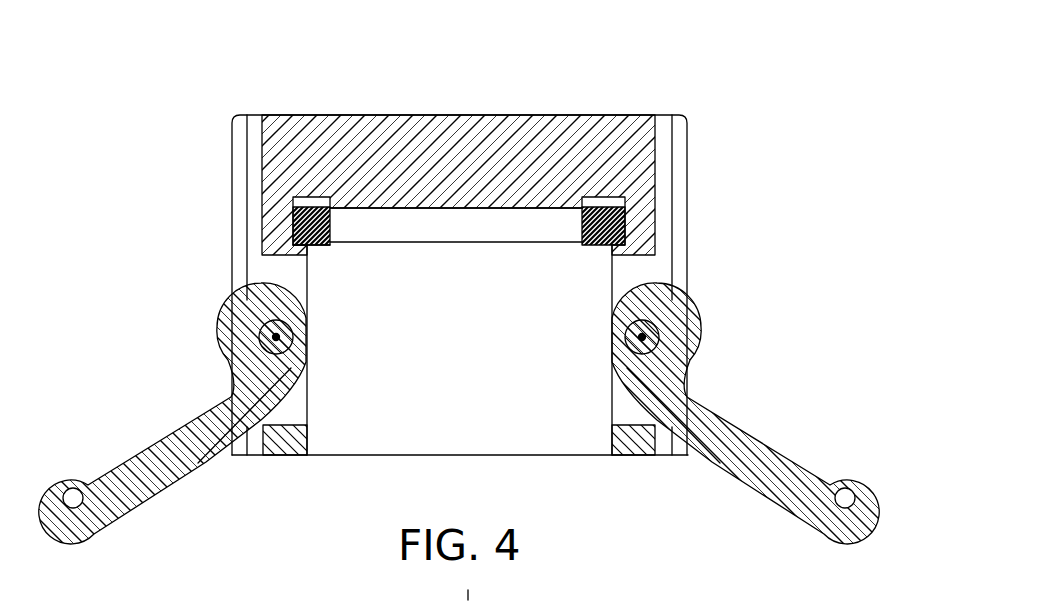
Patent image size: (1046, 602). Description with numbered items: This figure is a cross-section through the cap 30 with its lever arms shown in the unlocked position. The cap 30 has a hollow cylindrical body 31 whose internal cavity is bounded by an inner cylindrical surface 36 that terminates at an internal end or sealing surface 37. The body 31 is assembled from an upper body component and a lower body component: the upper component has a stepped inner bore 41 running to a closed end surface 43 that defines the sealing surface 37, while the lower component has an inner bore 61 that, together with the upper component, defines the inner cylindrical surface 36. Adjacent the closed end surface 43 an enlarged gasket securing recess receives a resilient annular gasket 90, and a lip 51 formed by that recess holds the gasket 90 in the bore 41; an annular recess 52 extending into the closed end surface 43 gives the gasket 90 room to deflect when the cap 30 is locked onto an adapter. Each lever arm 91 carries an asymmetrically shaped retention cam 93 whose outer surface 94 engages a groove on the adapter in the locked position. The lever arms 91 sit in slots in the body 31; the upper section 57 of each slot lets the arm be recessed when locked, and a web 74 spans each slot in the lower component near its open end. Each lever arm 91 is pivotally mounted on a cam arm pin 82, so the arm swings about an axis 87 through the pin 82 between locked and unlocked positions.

The cap 30 is at (148, 105).
The hollow cylindrical body 31 is at (322, 115).
The upper section of lever arm receiving slot 57 is at (667, 162).
The internal end surface 37 is at (478, 215).
The closed end surface 43 is at (497, 207).
The annular recess 52 is at (308, 198).
The annular gasket 90 is at (325, 245).
The lip 51 is at (583, 247).
The stepped inner bore 41 is at (612, 277).
The inner cylindrical surface 36 is at (469, 376).
The web 74 is at (290, 457).
The inner bore 61 is at (612, 435).
The lever arm 91 is at (133, 480).
The retention cam 93 is at (243, 310).
The outer surface of cam 94 is at (235, 300).
The cam arm pin 82 is at (282, 328).
The axis 87 is at (275, 338).